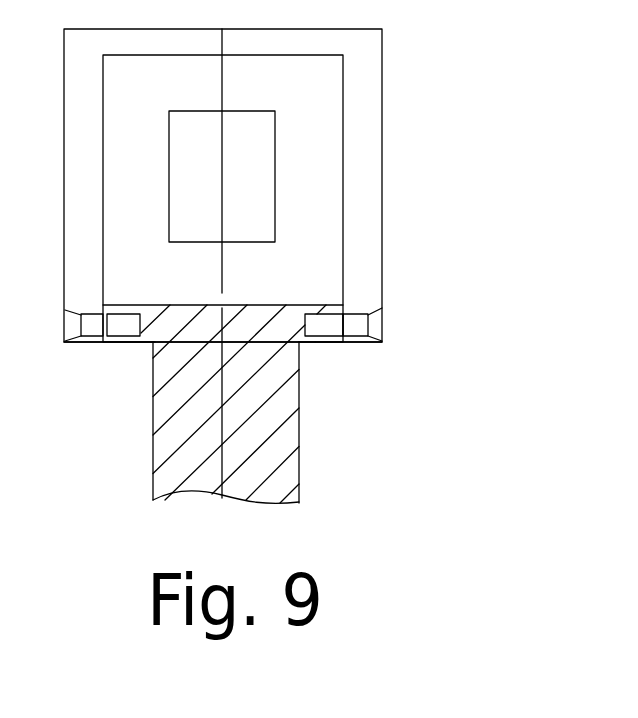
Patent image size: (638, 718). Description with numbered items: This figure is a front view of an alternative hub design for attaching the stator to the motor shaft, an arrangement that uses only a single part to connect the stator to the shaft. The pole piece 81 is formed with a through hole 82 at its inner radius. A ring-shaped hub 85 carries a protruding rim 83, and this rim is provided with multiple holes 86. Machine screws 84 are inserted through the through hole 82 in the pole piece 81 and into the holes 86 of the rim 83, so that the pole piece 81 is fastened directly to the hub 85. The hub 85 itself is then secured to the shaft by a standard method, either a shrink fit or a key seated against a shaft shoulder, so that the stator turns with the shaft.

The pole piece 81 is at (367, 148).
The through hole 82 is at (283, 274).
The protruding rim 83 is at (87, 363).
The machine screw 84 is at (383, 323).
The hub 85 is at (283, 436).
The holes 86 is at (347, 370).